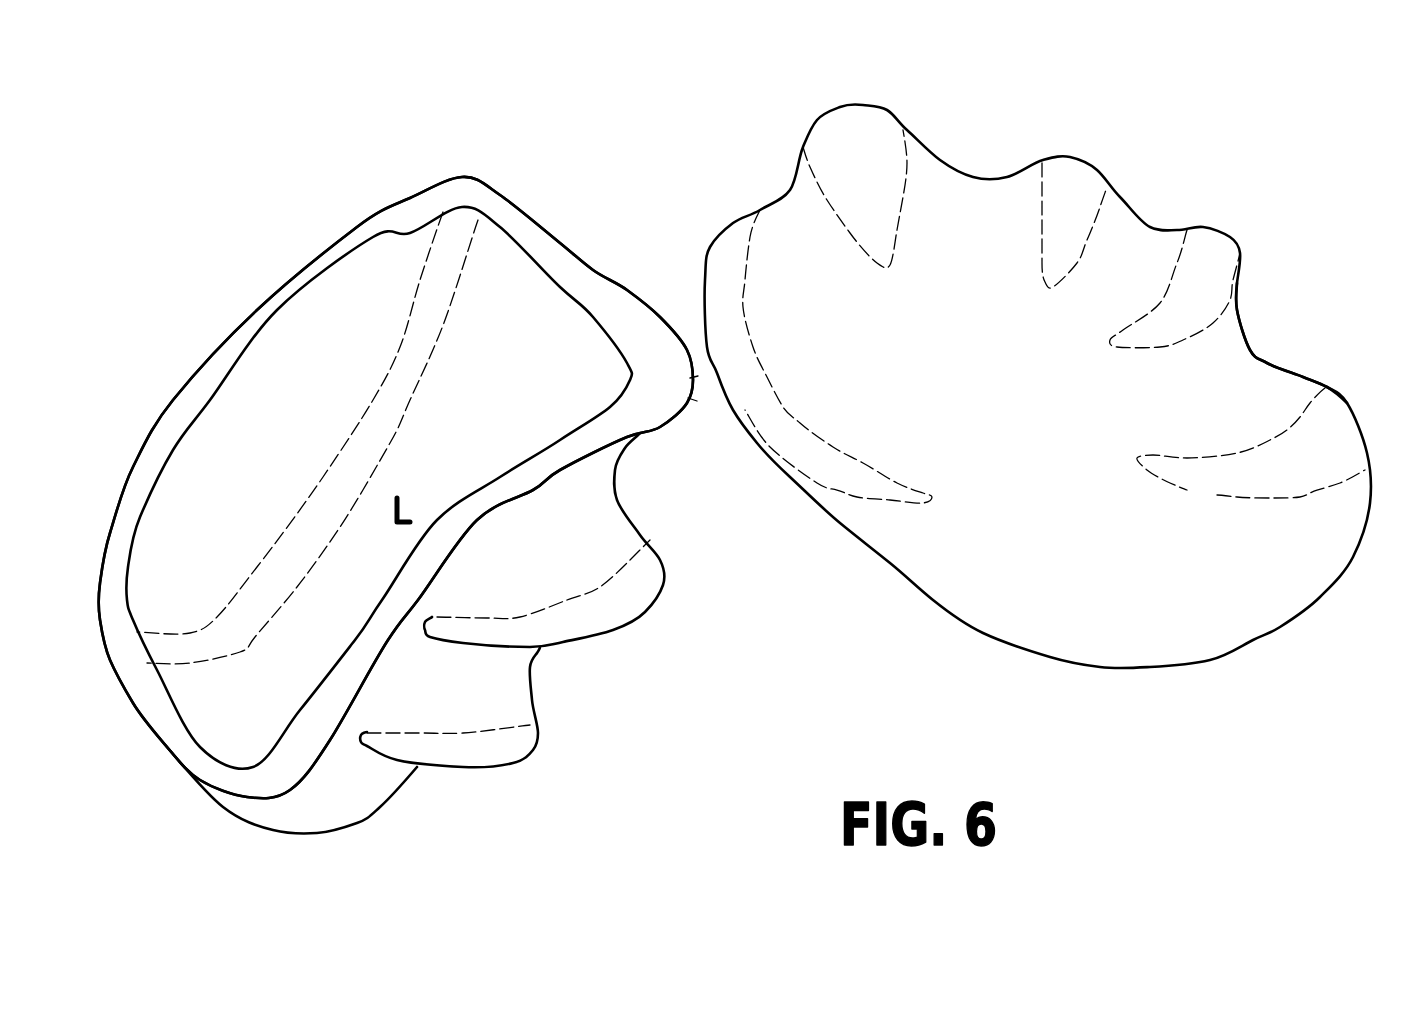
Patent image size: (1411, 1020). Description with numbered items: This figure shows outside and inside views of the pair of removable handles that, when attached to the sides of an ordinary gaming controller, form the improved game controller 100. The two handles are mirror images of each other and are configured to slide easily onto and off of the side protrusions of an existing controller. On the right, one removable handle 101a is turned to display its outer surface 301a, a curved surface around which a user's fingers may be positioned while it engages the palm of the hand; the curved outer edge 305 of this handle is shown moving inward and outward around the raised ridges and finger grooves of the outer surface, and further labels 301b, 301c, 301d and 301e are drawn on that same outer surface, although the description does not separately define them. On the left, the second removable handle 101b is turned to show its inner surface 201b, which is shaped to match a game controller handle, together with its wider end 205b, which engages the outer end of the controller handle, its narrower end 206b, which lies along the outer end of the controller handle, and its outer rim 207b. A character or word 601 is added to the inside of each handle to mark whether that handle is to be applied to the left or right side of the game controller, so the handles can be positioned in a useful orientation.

The improved game controller 100 is at (330, 131).
The removable handle 101a is at (1063, 430).
The removable handle 101b is at (613, 557).
The inner surface 201b is at (392, 446).
The wider end 205b is at (203, 723).
The narrower end 206b is at (583, 320).
The outer rim 207b is at (264, 328).
The outer surface 301a is at (803, 437).
The index finger pocket 301b is at (877, 123).
The middle finger pocket 301c is at (1080, 185).
The ring finger pocket 301d is at (1218, 275).
The little finger pocket 301e is at (1237, 483).
The curved outer edge 305 is at (1260, 370).
The character or word 601 is at (390, 508).